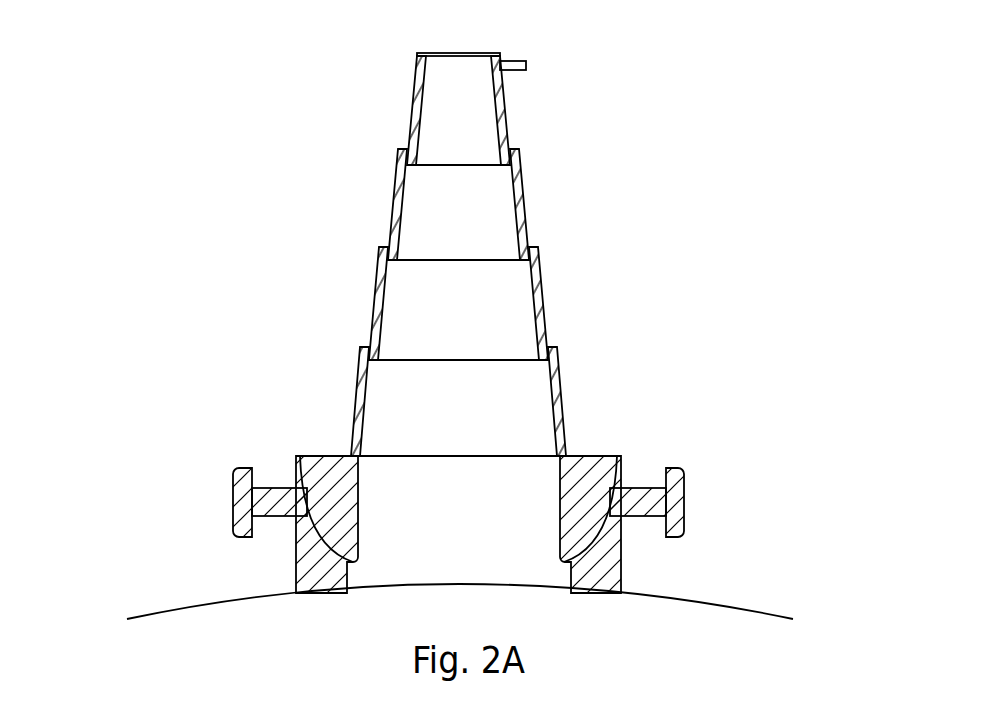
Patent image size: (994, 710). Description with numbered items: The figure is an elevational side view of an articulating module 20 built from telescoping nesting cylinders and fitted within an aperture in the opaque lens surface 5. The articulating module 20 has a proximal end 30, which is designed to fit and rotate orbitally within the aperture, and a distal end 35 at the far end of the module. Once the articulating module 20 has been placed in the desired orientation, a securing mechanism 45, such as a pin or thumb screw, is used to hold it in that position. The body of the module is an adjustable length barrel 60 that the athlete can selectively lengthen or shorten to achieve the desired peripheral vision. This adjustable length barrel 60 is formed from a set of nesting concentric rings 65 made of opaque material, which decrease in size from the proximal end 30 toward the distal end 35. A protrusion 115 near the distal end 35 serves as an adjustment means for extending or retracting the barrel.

The opaque lens surface 5 is at (697, 598).
The articulating module 20 is at (590, 470).
The proximal end 30 is at (442, 580).
The distal end 35 is at (432, 53).
The securing mechanism 45 is at (668, 503).
The adjustable length barrel 60 is at (359, 373).
The nesting concentric rings 65 is at (416, 303).
The protrusion 115 is at (526, 66).